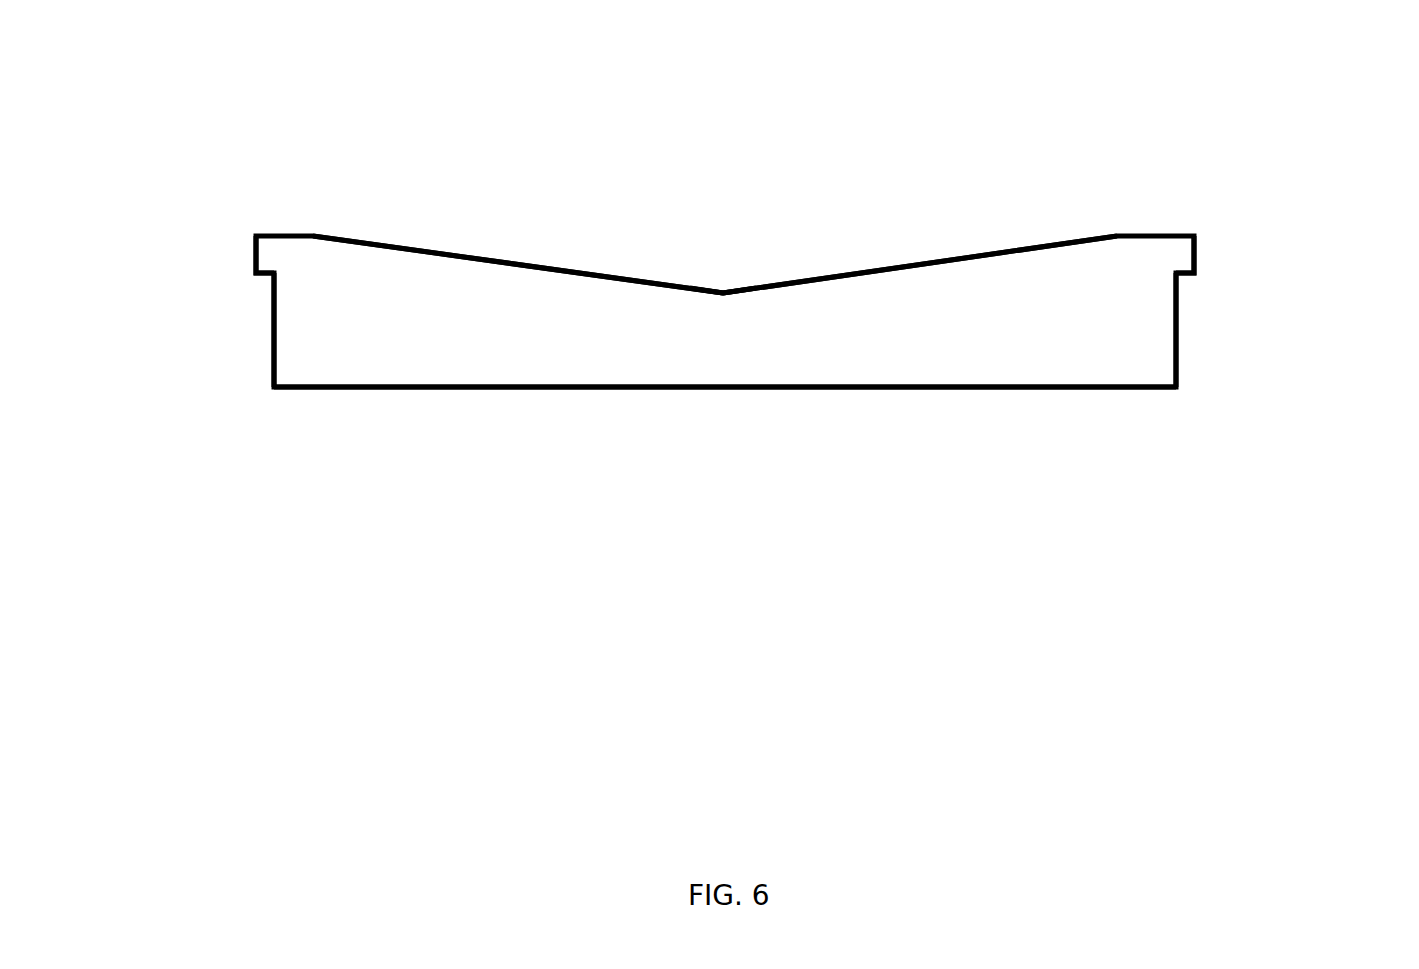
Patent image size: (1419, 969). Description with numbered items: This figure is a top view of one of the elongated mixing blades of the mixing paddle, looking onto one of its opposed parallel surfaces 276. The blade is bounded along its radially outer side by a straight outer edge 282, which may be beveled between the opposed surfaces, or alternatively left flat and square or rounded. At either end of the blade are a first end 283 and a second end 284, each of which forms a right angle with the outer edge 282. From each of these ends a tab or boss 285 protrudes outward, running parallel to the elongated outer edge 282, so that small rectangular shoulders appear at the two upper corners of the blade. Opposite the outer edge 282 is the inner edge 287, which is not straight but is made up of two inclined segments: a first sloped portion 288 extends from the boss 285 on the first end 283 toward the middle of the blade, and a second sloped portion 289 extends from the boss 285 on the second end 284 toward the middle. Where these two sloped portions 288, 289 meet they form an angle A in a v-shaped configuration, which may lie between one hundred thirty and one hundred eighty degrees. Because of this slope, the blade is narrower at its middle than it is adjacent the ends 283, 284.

The surface 276 is at (901, 330).
The outer edge 282 is at (483, 388).
The first end 283 is at (273, 340).
The second end 284 is at (1176, 335).
The tab or boss 285 is at (255, 256).
The inner edge 287 is at (692, 288).
The first sloped portion 288 is at (478, 255).
The second sloped portion 289 is at (975, 257).
The angle A is at (725, 256).